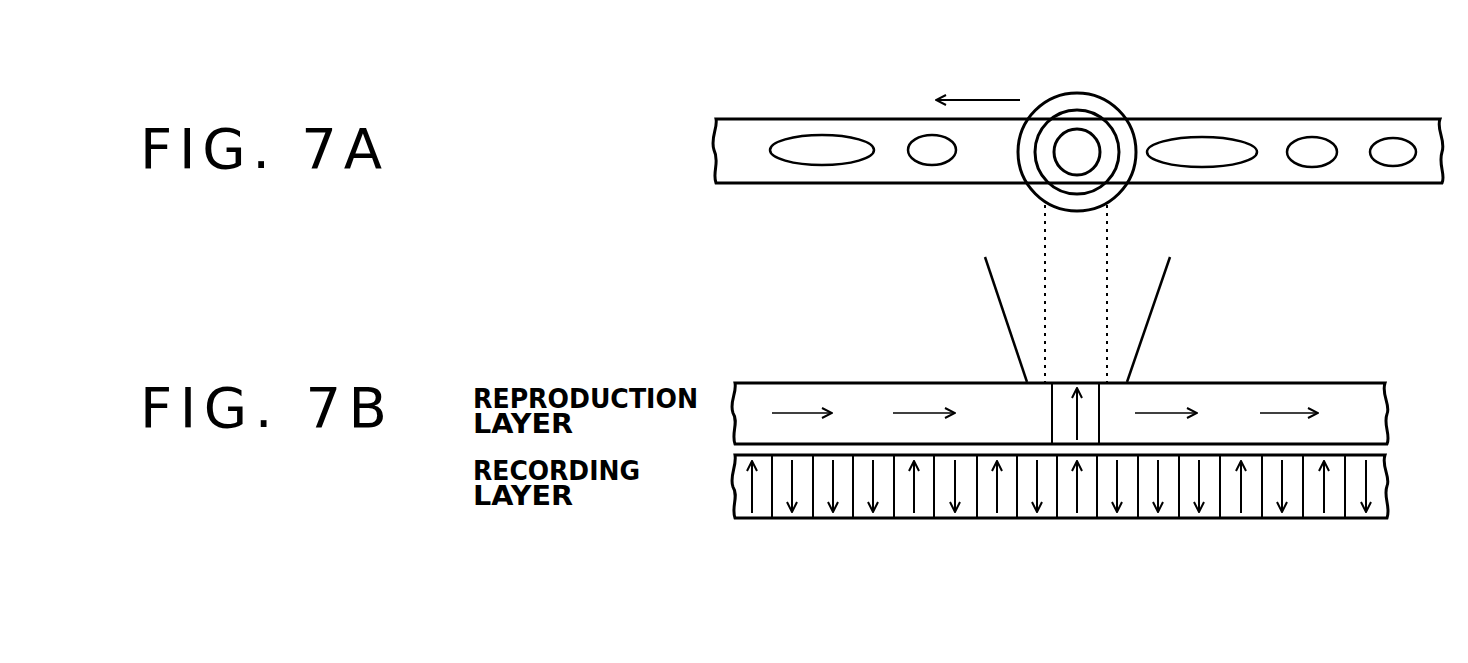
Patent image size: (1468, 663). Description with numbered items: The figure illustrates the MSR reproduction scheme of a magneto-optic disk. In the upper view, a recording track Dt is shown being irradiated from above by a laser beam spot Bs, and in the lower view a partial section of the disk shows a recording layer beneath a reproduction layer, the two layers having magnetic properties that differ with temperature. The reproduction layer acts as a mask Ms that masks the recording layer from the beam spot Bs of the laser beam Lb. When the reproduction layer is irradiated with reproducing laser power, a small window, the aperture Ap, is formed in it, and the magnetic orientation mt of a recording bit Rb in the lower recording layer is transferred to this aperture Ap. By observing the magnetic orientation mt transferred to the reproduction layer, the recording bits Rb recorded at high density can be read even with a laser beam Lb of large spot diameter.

In FIG. 7A, the laser beam spot Bs is at (1117, 110).
In FIG. 7A, the recording track Dt is at (780, 163).
In FIG. 7A, the aperture Ap is at (1050, 162).
In FIG. 7A, the mask Ms is at (1107, 176).
In FIG. 7B, the laser beam Lb is at (1000, 310).
In FIG. 7B, the magnetic orientation mt is at (1295, 410).
In FIG. 7B, the recording bit Rb is at (760, 503).